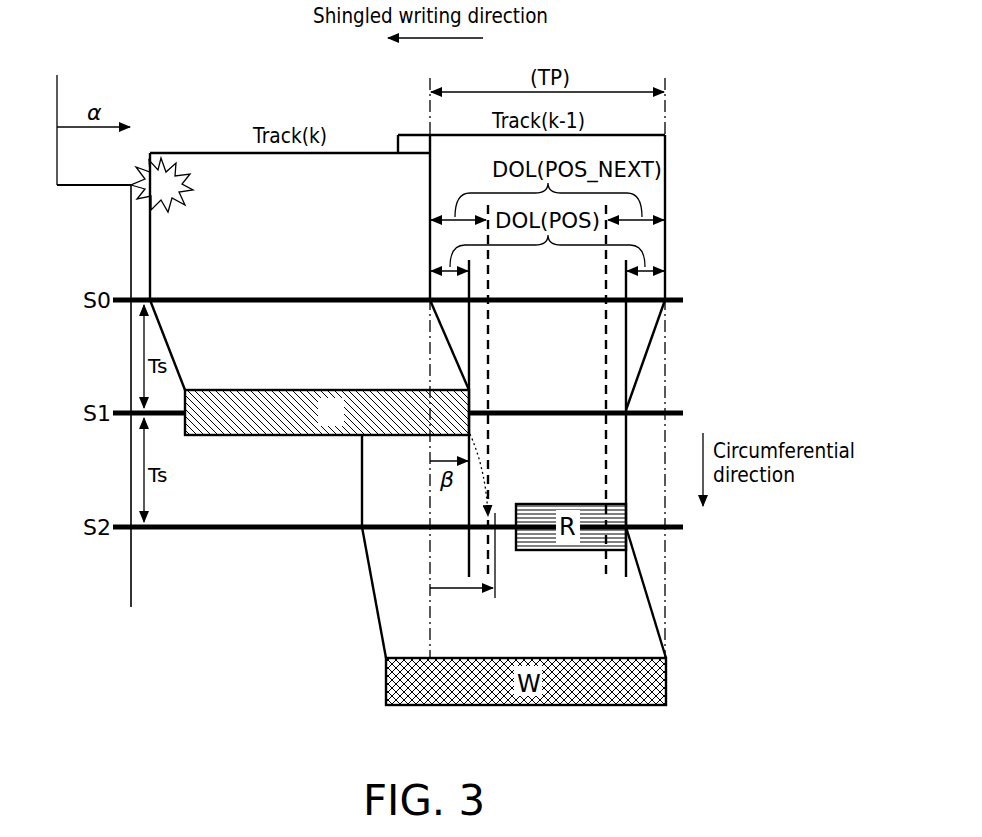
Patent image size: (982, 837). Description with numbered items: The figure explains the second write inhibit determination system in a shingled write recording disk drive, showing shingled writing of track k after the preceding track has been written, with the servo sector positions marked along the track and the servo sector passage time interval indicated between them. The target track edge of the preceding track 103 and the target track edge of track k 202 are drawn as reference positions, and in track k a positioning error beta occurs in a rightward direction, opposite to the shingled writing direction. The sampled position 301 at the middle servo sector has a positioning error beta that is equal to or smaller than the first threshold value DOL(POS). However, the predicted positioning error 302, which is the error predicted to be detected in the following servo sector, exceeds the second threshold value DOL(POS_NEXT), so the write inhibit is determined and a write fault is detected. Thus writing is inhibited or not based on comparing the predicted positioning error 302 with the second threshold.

The sampled position 301 is at (238, 390).
The target track edge of the track (k) 202 is at (428, 503).
The target track edge of the track (k−1) 103 is at (665, 362).
The predicted positioning error 302 is at (458, 589).